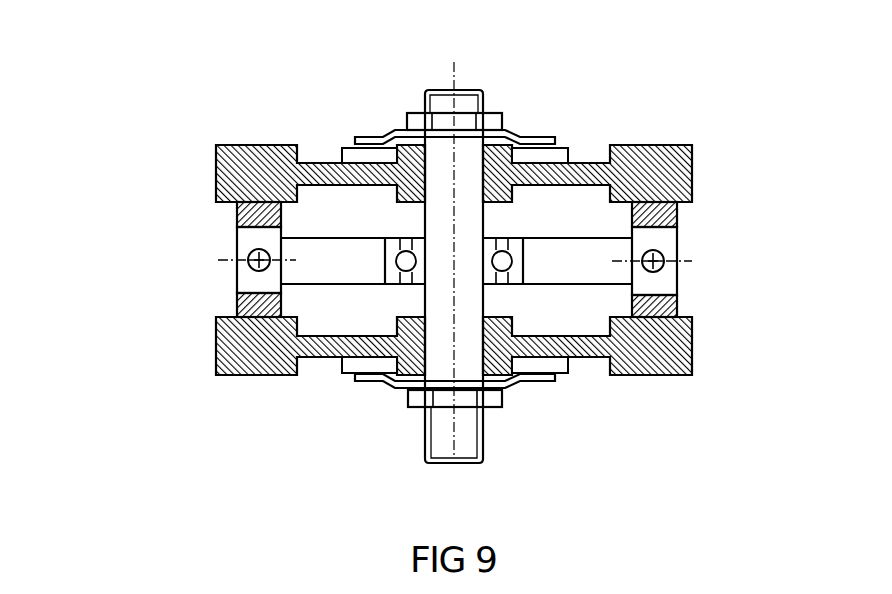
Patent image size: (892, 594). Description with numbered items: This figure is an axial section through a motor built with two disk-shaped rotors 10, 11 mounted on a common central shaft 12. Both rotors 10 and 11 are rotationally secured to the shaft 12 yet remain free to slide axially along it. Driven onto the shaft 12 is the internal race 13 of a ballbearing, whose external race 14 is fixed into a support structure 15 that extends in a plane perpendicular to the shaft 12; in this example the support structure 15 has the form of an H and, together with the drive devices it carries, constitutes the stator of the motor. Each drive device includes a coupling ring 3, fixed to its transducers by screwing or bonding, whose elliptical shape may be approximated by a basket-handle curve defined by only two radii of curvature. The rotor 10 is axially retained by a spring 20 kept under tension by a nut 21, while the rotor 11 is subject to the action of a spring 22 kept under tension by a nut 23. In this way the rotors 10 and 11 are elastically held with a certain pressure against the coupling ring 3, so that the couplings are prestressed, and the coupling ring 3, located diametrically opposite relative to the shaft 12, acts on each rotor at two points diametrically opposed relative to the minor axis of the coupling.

The coupling ring 3 is at (248, 286).
The rotor 10 is at (321, 158).
The rotor 11 is at (312, 348).
The shaft 12 is at (467, 178).
The internal race 13 is at (493, 274).
The external race 14 is at (516, 250).
The support structure 15 is at (347, 258).
The spring 20 is at (388, 137).
The nut 21 is at (463, 120).
The spring 22 is at (390, 386).
The nut 23 is at (472, 399).